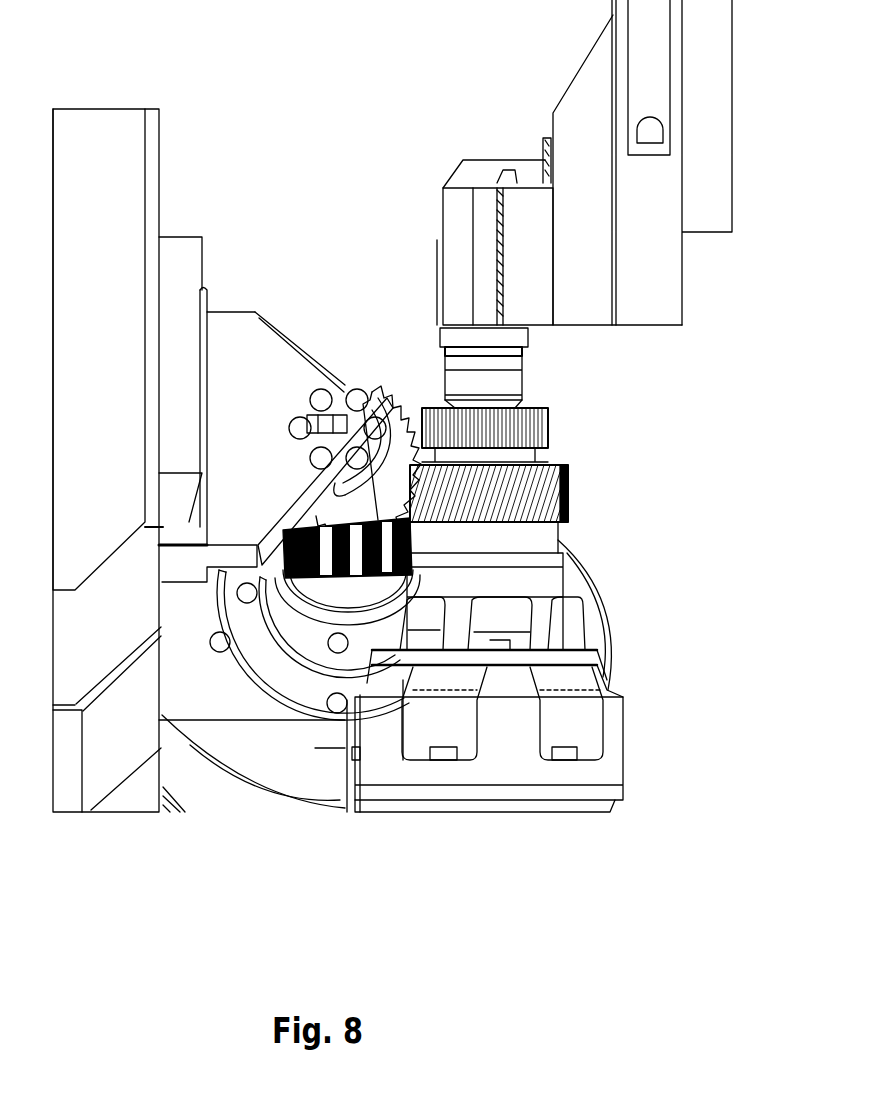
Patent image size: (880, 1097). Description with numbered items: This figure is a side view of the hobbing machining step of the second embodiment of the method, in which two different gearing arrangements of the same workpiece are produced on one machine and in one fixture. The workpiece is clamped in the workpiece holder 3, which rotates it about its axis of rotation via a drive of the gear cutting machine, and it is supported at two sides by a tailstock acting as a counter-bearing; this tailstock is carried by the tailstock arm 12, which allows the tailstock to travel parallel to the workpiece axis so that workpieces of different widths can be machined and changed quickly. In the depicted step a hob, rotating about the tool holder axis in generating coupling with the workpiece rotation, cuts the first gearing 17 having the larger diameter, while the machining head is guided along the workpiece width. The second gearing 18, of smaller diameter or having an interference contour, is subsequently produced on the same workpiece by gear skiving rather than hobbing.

The workpiece holder 3 is at (528, 582).
The tailstock arm 12 is at (572, 295).
The first gearing 17 is at (552, 495).
The second gearing 18 is at (533, 430).